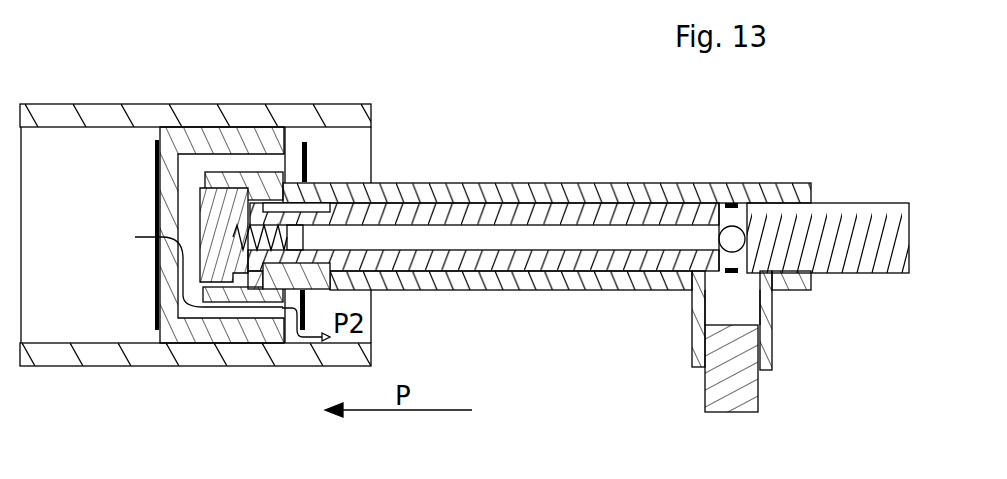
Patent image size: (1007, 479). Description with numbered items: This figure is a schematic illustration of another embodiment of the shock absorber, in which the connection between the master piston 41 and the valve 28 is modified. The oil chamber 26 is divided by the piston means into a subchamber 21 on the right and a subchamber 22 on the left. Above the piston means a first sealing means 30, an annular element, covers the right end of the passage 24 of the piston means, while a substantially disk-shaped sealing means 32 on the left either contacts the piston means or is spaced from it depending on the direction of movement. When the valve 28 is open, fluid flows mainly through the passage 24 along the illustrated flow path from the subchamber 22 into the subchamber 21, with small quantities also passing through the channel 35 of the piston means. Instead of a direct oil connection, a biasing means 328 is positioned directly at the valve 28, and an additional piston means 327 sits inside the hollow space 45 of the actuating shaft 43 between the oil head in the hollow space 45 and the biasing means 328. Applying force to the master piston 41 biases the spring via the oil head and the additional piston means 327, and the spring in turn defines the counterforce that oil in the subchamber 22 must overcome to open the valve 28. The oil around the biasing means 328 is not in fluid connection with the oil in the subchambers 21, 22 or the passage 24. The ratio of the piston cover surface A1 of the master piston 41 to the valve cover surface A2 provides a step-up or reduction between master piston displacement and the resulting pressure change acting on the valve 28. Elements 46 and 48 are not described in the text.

The subchamber 21 is at (343, 147).
The subchamber 22 is at (63, 152).
The passage 24 is at (248, 162).
The oil chamber 26 is at (100, 353).
The valve 28 is at (224, 240).
The first sealing means 30 is at (318, 127).
The sealing means 32 is at (165, 157).
The channel 35 is at (288, 206).
The master piston 41 is at (716, 340).
The actuating shaft 43 is at (637, 287).
The hollow space 45 is at (588, 243).
The ball 46 is at (735, 207).
The end block 48 is at (840, 240).
The additional piston means 327 is at (285, 250).
The biasing means 328 is at (240, 265).
The piston cover surface A1 is at (713, 327).
The valve cover surface A2 is at (235, 177).